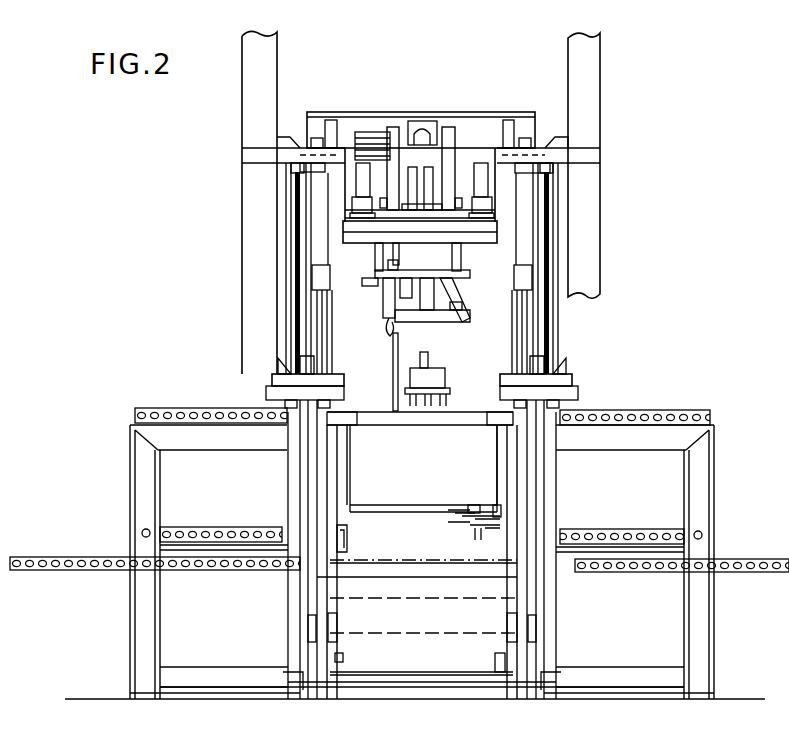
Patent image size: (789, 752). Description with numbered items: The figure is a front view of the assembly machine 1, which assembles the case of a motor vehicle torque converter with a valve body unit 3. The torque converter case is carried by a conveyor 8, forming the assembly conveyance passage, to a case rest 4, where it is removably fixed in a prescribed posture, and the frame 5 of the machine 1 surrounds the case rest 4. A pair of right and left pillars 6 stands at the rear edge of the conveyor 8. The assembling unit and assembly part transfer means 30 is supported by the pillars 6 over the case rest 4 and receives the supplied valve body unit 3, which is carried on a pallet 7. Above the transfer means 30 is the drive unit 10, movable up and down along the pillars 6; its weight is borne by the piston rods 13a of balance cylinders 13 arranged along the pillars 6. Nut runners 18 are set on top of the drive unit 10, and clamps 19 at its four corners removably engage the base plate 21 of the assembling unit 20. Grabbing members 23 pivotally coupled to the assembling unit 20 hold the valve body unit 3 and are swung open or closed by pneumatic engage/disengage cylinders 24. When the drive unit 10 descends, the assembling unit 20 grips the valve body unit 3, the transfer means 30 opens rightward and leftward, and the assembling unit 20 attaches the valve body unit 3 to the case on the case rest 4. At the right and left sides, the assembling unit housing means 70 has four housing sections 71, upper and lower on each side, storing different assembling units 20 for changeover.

The assembly machine 1 is at (705, 190).
The valve body unit 3 is at (426, 376).
The case rest 4 is at (365, 560).
The frame 5 is at (735, 457).
The pillars 6 is at (312, 333).
The pallet 7 is at (376, 410).
The conveyor 8 is at (80, 570).
The drive unit 10 is at (503, 203).
The balance cylinders 13 is at (300, 493).
The piston rods 13a is at (290, 222).
The nut runners 18 is at (450, 127).
The clamps 19 is at (364, 163).
The assembling unit 20 is at (462, 261).
The base plate 21 is at (490, 240).
The grabbing members 23 is at (385, 316).
The engage/disengage cylinders 24 is at (370, 278).
The assembling unit and assembly part transfer means 30 is at (478, 400).
The assembling unit housing means 70 is at (185, 405).
The housing sections 71 is at (195, 511).